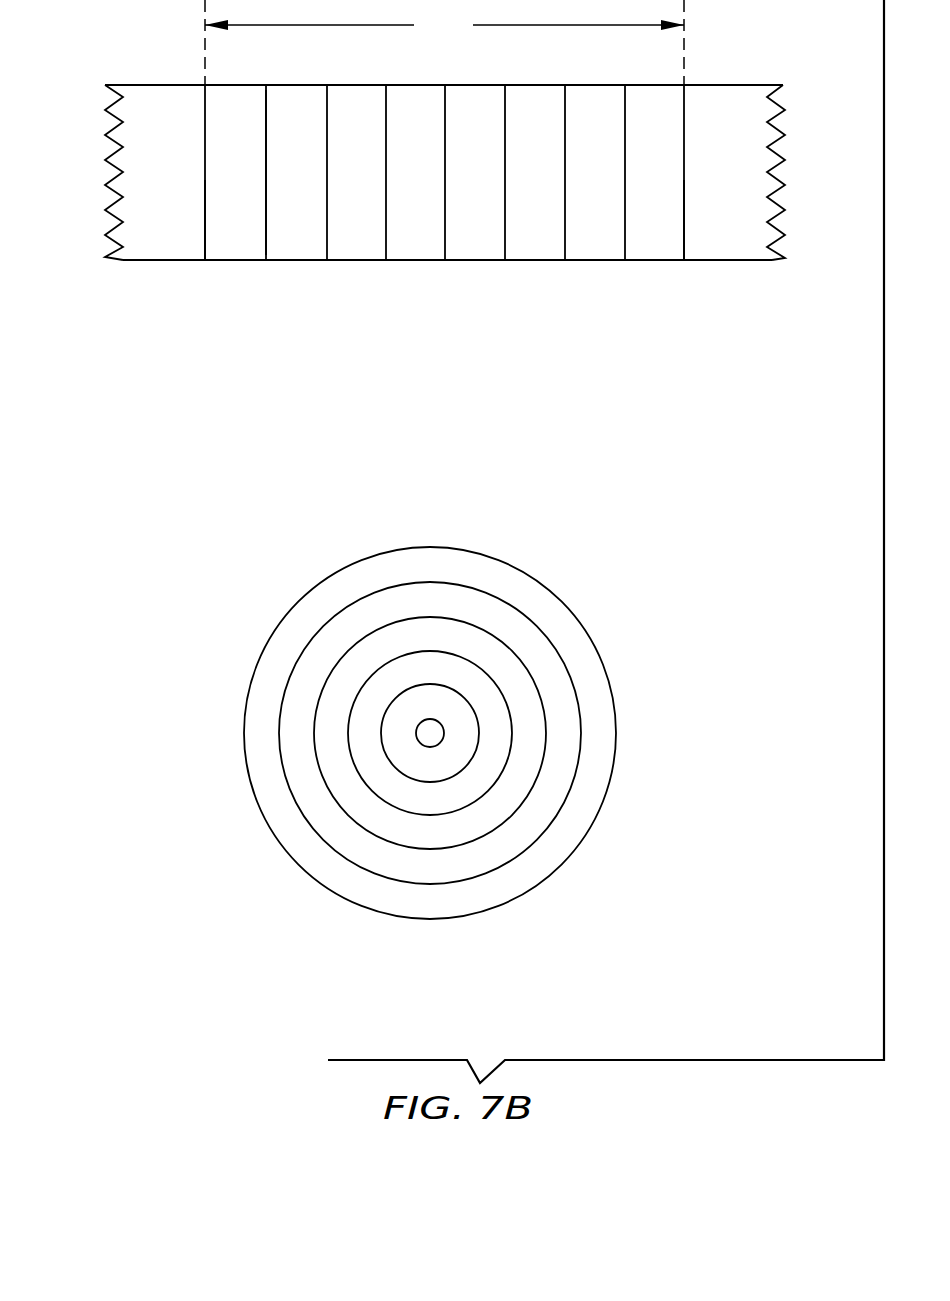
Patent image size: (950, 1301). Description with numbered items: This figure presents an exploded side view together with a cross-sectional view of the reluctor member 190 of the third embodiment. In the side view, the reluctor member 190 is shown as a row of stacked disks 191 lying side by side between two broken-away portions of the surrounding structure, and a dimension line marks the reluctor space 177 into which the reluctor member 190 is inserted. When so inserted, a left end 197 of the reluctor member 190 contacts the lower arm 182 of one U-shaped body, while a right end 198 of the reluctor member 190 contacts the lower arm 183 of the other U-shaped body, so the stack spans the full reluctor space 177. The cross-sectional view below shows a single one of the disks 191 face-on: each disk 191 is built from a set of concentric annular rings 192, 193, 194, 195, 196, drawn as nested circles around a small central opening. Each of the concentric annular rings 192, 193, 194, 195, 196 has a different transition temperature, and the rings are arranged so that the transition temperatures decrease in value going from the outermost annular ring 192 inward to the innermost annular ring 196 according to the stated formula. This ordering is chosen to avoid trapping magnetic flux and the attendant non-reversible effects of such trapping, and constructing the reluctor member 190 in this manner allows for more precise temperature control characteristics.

The reluctor space 177 is at (444, 42).
The lower arm 182 is at (140, 178).
The lower arm 183 is at (747, 177).
The reluctor member 190 is at (530, 324).
The stacked disk 191 is at (297, 225).
The outermost annular ring 192 is at (362, 887).
The concentric annular ring 193 is at (420, 852).
The concentric annular ring 194 is at (452, 833).
The concentric annular ring 195 is at (470, 783).
The innermost annular ring 196 is at (453, 745).
The left end 197 is at (205, 187).
The right end 198 is at (684, 187).